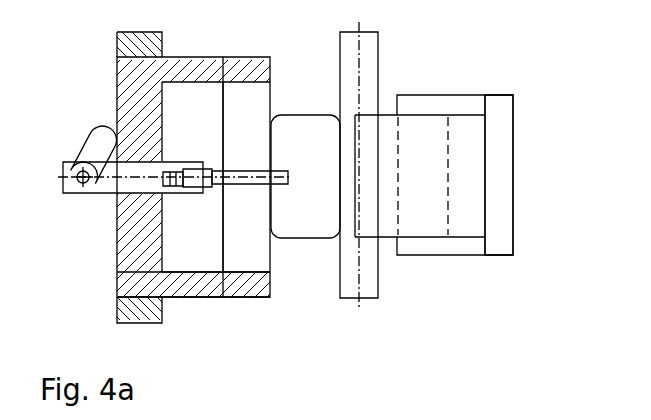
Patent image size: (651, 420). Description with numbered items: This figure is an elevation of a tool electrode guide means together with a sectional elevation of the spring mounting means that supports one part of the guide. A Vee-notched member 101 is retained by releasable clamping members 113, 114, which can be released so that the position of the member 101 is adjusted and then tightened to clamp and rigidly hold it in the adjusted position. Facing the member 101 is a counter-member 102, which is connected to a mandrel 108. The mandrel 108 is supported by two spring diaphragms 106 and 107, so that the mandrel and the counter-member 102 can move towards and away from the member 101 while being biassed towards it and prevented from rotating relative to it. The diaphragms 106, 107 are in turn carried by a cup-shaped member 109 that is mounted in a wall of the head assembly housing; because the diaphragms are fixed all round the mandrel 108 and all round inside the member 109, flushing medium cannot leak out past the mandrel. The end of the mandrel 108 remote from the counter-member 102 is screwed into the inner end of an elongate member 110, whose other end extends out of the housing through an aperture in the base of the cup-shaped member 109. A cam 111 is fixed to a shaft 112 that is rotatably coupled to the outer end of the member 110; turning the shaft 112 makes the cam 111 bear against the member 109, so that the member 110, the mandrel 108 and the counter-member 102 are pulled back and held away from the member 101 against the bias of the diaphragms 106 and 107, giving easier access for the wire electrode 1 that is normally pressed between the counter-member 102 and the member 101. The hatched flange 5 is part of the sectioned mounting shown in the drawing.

The electrode 1 is at (372, 64).
The flange 5 is at (153, 43).
The Vee-notched member 101 is at (425, 133).
The counter-member 102 is at (318, 223).
The spring diaphragm 106 is at (272, 106).
The spring diaphragm 107 is at (222, 117).
The mandrel 108 is at (267, 175).
The cup-shaped member 109 is at (193, 287).
The elongate member 110 is at (118, 186).
The cam 111 is at (103, 136).
The shaft 112 is at (63, 193).
The clamping member 113 is at (500, 148).
The clamping member 114 is at (499, 175).